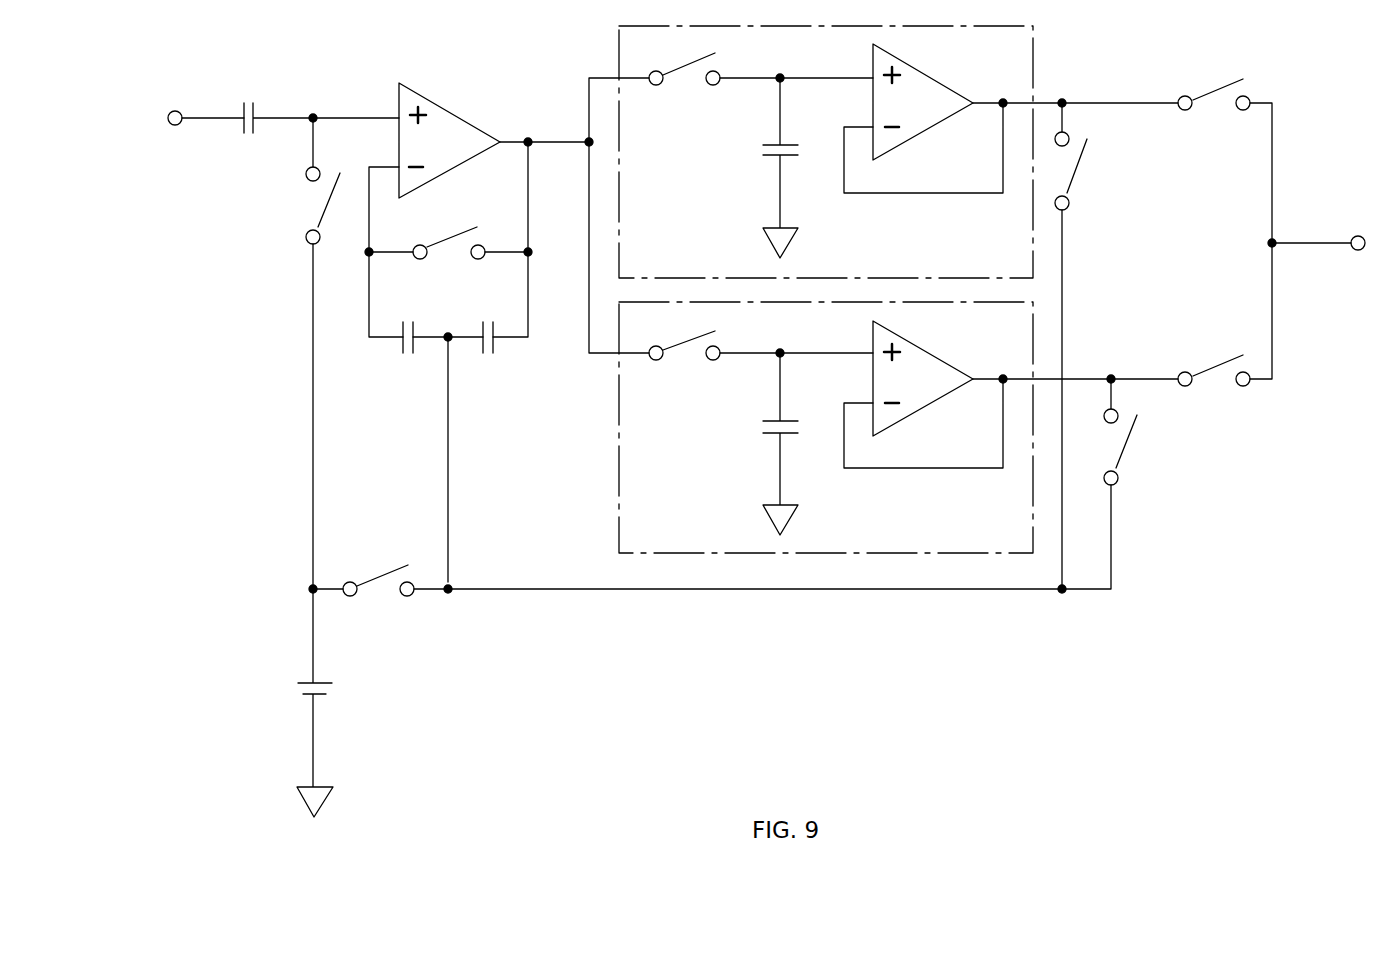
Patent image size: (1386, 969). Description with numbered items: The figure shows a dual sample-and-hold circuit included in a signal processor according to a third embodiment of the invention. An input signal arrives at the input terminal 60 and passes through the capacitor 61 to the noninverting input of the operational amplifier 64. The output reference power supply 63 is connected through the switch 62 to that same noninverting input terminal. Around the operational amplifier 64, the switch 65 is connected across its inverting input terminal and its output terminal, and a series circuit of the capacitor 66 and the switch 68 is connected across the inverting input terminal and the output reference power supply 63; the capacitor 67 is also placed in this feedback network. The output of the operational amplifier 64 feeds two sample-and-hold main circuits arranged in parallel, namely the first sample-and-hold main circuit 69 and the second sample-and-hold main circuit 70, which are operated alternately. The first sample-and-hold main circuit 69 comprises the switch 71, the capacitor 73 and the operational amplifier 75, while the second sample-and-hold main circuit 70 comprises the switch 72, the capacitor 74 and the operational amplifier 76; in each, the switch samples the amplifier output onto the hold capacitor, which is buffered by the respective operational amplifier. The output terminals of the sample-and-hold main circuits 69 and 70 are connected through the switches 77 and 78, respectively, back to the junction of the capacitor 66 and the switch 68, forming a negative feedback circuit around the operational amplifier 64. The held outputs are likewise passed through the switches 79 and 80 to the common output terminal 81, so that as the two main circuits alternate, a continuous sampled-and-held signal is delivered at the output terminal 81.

The input terminal 60 is at (175, 110).
The capacitor 61 is at (247, 100).
The switch 62 is at (300, 207).
The output reference power supply 63 is at (295, 690).
The operational amplifier 64 is at (467, 137).
The switch 65 is at (478, 240).
The capacitor 66 is at (407, 358).
The capacitor 67 is at (488, 357).
The switch 68 is at (380, 590).
The first sample-and-hold main circuit 69 is at (618, 42).
The second sample-and-hold main circuit 70 is at (617, 480).
The switch 71 is at (685, 77).
The switch 72 is at (685, 352).
The capacitor 73 is at (760, 152).
The capacitor 74 is at (760, 427).
The operational amplifier 75 is at (942, 93).
The operational amplifier 76 is at (942, 373).
The switch 77 is at (1080, 172).
The switch 78 is at (1132, 447).
The switch 79 is at (1220, 83).
The switch 80 is at (1215, 362).
The output terminal 81 is at (1357, 236).